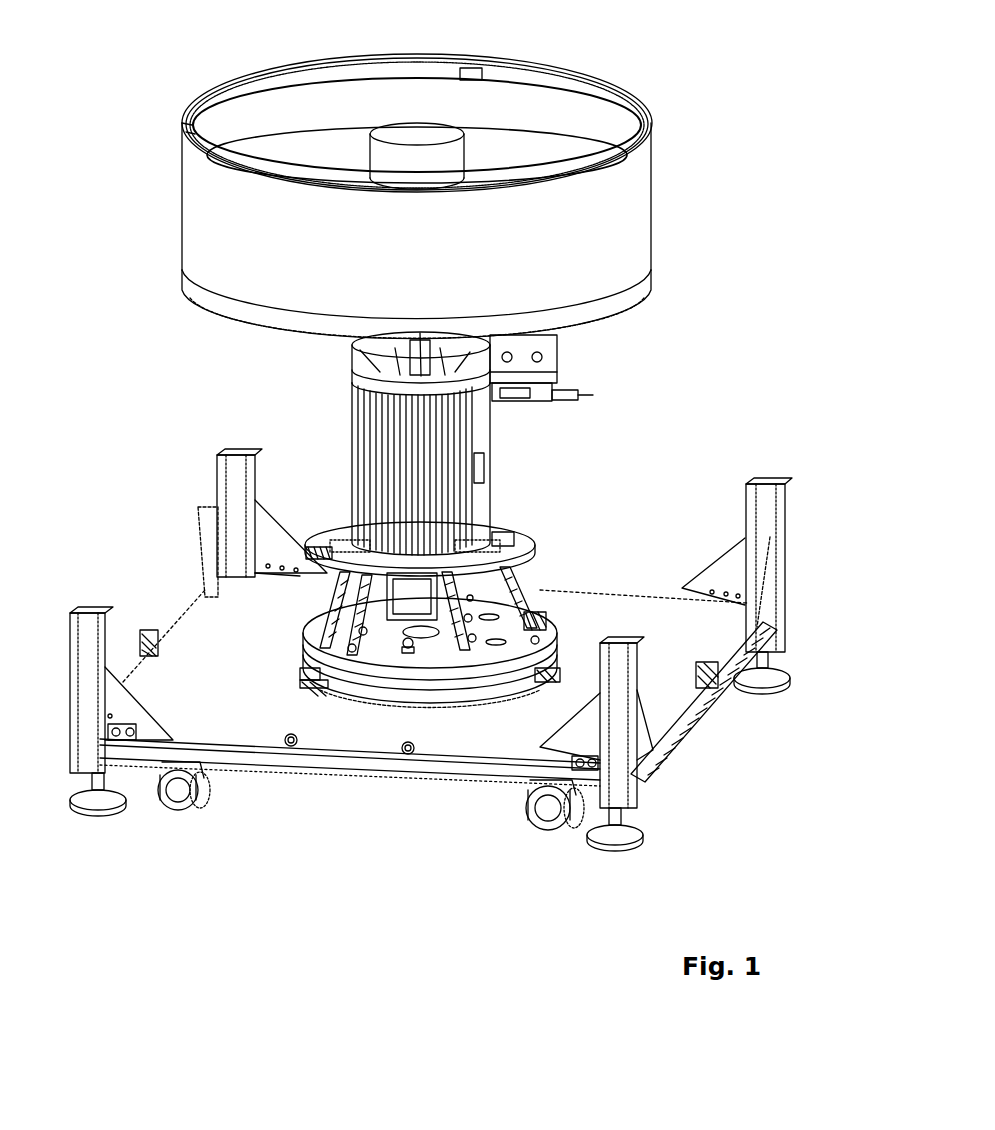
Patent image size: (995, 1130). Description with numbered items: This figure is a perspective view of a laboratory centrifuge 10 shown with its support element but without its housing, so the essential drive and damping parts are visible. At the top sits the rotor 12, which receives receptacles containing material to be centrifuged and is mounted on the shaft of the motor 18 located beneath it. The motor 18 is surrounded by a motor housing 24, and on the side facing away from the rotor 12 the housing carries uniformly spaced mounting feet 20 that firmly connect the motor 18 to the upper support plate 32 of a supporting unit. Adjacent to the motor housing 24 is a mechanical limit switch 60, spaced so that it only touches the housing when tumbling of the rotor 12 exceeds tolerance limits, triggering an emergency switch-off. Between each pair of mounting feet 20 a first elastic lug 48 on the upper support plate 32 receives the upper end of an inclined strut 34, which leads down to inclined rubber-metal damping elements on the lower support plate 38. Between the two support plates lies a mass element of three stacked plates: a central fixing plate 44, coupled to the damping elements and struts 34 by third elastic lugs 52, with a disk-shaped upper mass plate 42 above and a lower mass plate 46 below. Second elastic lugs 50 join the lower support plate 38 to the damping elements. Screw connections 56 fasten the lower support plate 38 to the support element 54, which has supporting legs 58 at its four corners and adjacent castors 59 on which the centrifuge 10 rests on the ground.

The laboratory centrifuge 10 is at (141, 23).
The rotor 12 is at (277, 213).
The motor 18 is at (336, 443).
The motor housing 24 is at (383, 427).
The mechanical limit switch 60 is at (550, 387).
The mounting feet 20 is at (510, 543).
The upper support plate 32 is at (330, 520).
The first elastic lug 48 is at (313, 552).
The struts 34 is at (337, 592).
The lower support plate 38 is at (372, 690).
The upper mass plate 42 is at (487, 660).
The fixing plate 44 is at (503, 660).
The lower mass plate 46 is at (520, 660).
The screw connections 56 is at (410, 653).
The third elastic lugs 52 is at (540, 623).
The second elastic lugs 50 is at (560, 665).
The support element 54 is at (237, 720).
The supporting legs 58 is at (613, 787).
The castors 59 is at (547, 820).